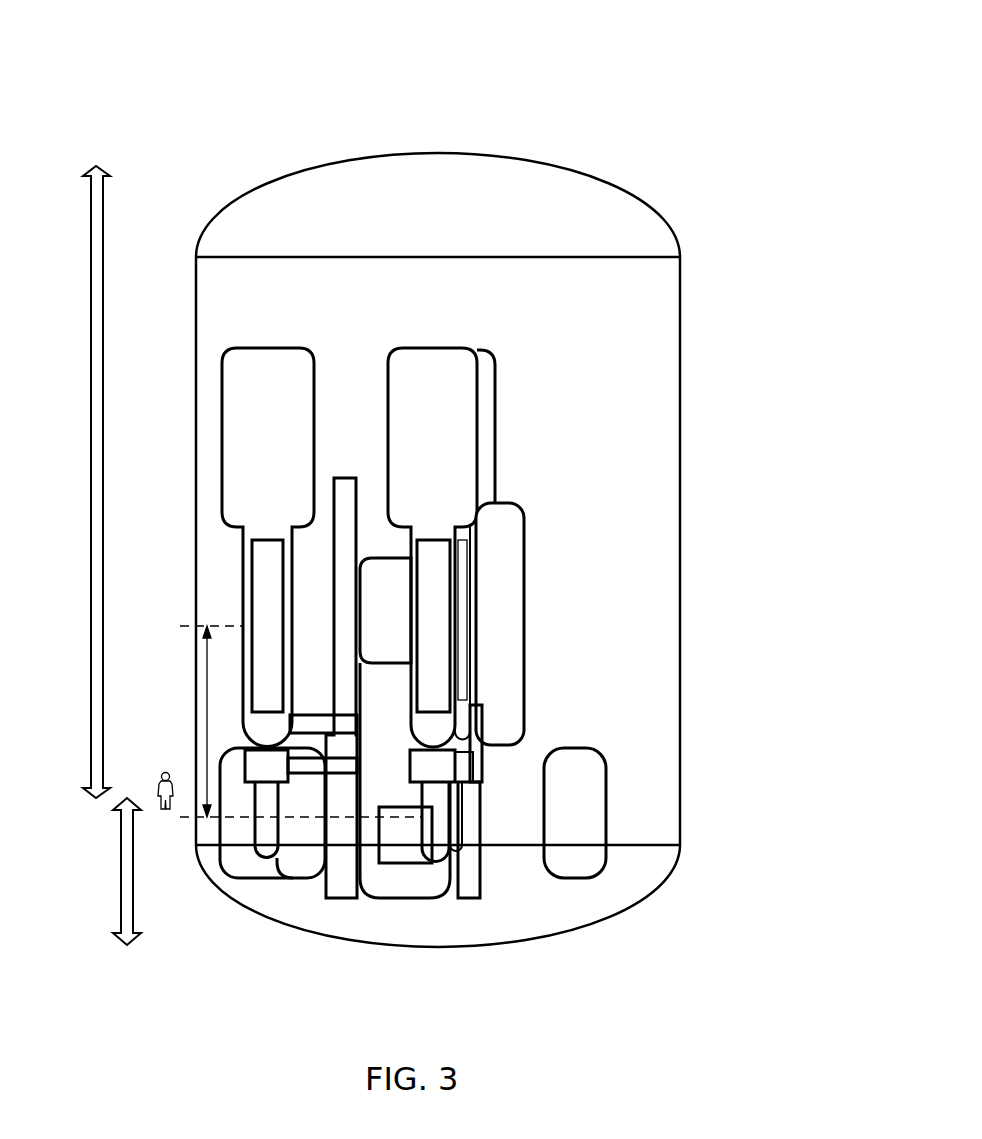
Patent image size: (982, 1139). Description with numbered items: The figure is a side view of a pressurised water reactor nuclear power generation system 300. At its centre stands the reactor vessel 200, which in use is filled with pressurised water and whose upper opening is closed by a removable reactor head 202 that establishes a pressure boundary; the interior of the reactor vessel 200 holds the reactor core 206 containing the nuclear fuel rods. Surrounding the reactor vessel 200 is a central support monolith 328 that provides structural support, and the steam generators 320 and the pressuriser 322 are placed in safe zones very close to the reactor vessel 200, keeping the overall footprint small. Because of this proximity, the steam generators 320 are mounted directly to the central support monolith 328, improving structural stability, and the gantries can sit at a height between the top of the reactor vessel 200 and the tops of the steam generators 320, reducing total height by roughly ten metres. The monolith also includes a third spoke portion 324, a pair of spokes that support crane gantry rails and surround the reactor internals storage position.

The nuclear power generation system 300 is at (699, 83).
The steam generator 320 is at (240, 430).
The pressuriser 322 is at (525, 580).
The central support monolith 328 is at (481, 737).
The reactor head 202 is at (395, 580).
The third spoke portion 324 is at (300, 725).
The reactor vessel 200 is at (385, 898).
The reactor core 206 is at (413, 865).